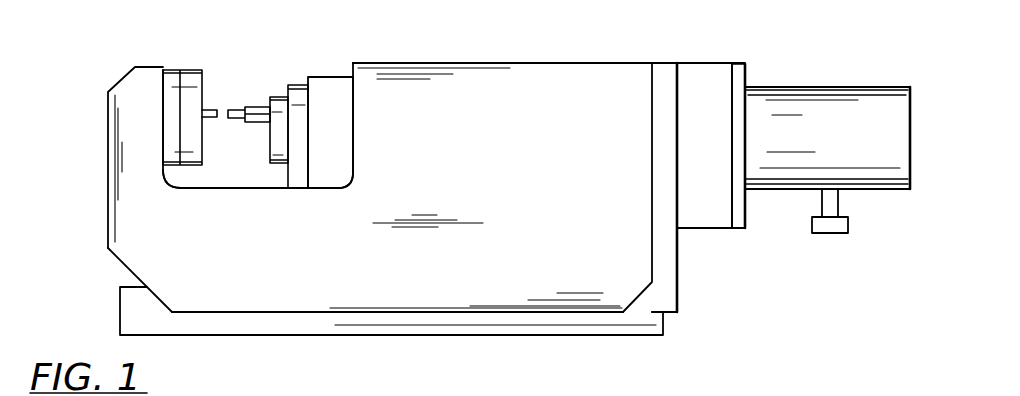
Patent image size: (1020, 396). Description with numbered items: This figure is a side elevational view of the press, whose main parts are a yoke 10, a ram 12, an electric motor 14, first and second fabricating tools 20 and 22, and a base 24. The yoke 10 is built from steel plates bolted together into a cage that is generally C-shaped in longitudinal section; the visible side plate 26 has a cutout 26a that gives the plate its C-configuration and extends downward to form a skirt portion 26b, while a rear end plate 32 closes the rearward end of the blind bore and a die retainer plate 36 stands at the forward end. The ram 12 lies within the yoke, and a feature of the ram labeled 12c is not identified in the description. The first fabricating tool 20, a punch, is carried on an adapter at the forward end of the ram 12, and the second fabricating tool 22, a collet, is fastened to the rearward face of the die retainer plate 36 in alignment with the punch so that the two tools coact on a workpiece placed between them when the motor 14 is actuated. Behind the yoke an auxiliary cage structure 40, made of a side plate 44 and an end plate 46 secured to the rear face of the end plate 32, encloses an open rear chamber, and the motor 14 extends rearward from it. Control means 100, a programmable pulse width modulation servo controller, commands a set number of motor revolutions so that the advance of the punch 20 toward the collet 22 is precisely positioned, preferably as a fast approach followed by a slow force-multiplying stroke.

The yoke 10 is at (482, 63).
The ram 12 is at (330, 77).
The spindle housing 12c is at (308, 131).
The electric motor 14 is at (848, 84).
The first fabricating tool 20 is at (237, 107).
The second fabricating tool 22 is at (215, 107).
The base 24 is at (120, 307).
The side plate 26 is at (538, 196).
The cutout 26a is at (233, 187).
The skirt portion 26b is at (480, 292).
The rear end plate 32 is at (667, 63).
The die retainer plate 36 is at (173, 72).
The auxiliary cage structure 40 is at (709, 57).
The side plate 44 is at (716, 151).
The end plate 46 is at (739, 72).
The control means 100 is at (831, 226).